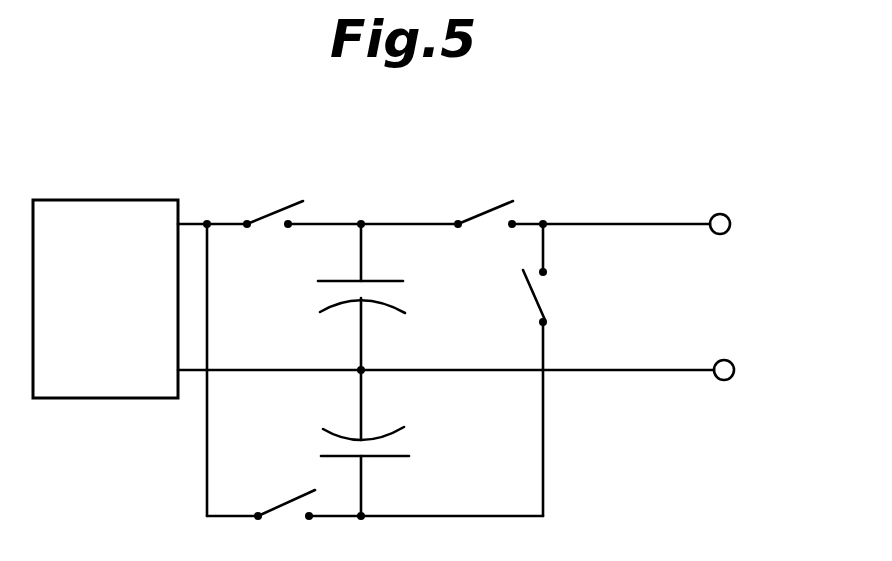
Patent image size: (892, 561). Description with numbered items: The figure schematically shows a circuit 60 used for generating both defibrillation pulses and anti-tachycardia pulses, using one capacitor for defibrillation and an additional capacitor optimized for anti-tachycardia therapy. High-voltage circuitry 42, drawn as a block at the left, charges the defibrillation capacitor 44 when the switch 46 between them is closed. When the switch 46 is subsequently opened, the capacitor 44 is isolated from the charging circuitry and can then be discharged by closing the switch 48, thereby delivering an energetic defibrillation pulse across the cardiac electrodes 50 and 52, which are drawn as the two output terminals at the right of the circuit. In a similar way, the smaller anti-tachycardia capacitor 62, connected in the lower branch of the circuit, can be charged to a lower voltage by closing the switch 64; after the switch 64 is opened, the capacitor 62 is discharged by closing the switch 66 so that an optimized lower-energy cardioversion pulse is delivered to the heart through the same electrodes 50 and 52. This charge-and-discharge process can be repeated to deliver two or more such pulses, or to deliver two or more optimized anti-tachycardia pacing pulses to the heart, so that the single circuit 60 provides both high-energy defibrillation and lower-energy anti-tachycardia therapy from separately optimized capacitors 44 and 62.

The high-voltage circuitry 42 is at (112, 200).
The defibrillation capacitor 44 is at (337, 300).
The switch 46 is at (295, 215).
The switch 48 is at (512, 210).
The cardiac electrode 50 is at (731, 218).
The cardiac electrode 52 is at (734, 364).
The circuit 60 is at (730, 197).
The anti-tachycardia capacitor 62 is at (380, 437).
The switch 64 is at (288, 500).
The switch 66 is at (533, 278).